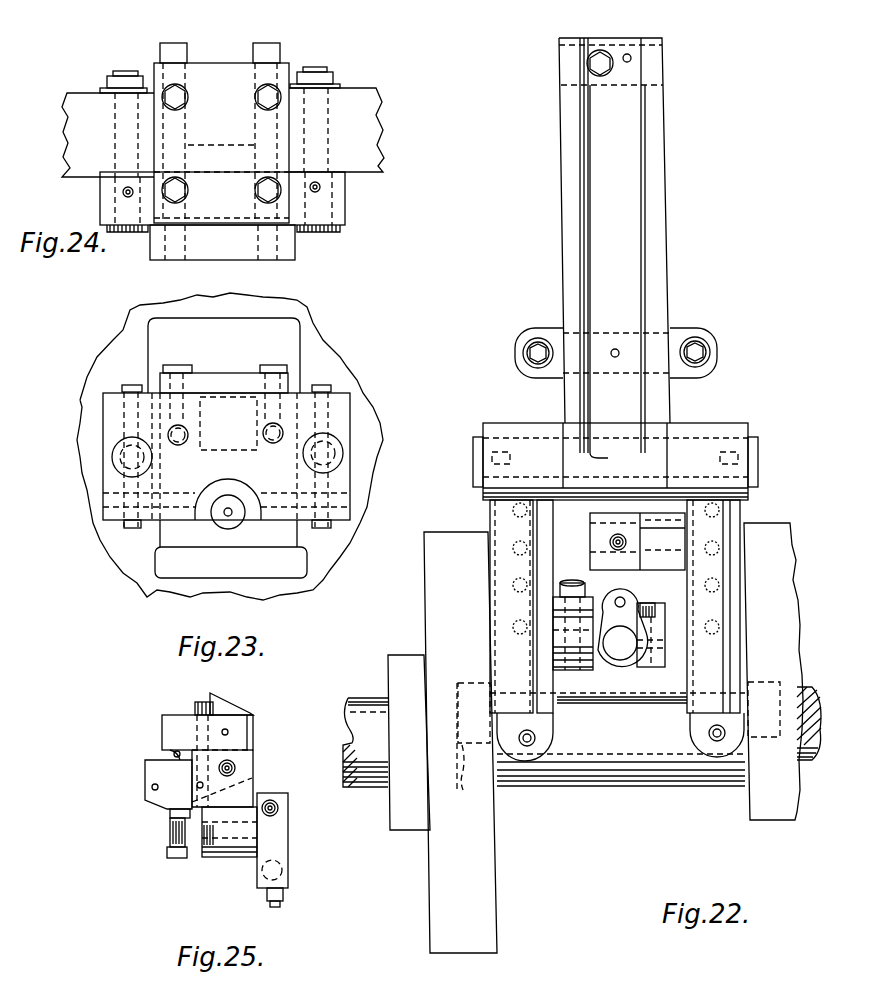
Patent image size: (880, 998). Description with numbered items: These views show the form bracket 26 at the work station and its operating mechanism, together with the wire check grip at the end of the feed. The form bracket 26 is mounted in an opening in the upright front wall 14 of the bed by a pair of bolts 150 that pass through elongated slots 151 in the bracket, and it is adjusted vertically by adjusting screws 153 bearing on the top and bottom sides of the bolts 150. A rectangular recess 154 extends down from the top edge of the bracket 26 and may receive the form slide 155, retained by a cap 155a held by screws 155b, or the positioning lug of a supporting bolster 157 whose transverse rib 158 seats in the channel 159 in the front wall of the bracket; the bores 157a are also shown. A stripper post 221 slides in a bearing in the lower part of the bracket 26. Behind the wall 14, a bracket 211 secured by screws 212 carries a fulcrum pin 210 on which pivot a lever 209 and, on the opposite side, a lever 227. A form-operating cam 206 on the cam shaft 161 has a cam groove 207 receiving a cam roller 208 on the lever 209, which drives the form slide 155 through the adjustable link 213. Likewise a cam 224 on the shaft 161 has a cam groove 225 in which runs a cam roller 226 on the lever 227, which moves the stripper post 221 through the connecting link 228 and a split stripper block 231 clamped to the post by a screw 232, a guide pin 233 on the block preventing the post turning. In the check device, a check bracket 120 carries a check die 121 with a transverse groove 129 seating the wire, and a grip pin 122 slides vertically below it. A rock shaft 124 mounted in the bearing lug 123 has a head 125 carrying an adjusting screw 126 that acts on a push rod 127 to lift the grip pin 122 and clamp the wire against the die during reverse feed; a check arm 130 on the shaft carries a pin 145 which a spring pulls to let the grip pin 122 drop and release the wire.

In FIG. 24, the upright front wall 14 is at (368, 156).
In FIG. 24, the form bracket 26 is at (340, 205).
In FIG. 23, the form bracket 26 is at (345, 418).
In FIG. 25, the check bracket 120 is at (150, 777).
In FIG. 25, the check die 121 is at (175, 724).
In FIG. 25, the grip pin 122 is at (146, 802).
In FIG. 25, the bearing lug 123 is at (233, 858).
In FIG. 25, the rock shaft 124 is at (202, 860).
In FIG. 25, the head 125 is at (170, 840).
In FIG. 25, the adjusting screw 126 is at (172, 858).
In FIG. 25, the push rod 127 is at (170, 833).
In FIG. 25, the transverse groove 129 is at (177, 750).
In FIG. 25, the check arm 130 is at (280, 858).
In FIG. 25, the pin 145 is at (283, 893).
In FIG. 24, the bolts 150 is at (112, 127).
In FIG. 23, the bolts 150 is at (112, 464).
In FIG. 24, the elongated slots 151 is at (338, 193).
In FIG. 23, the elongated slots 151 is at (330, 430).
In FIG. 23, the adjusting screws 153 is at (125, 418).
In FIG. 23, the rectangular recess 154 is at (200, 428).
In FIG. 22, the form slide 155 is at (600, 548).
In FIG. 24, the cap 155a is at (228, 68).
In FIG. 23, the cap 155a is at (200, 374).
In FIG. 24, the screws 155b is at (255, 98).
In FIG. 23, the screws 155b is at (275, 372).
In FIG. 24, the supporting bolster 157 is at (244, 250).
In FIG. 23, the supporting bolster 157 is at (170, 503).
In FIG. 24, the bore 157a is at (221, 145).
In FIG. 23, the bore 157a is at (182, 444).
In FIG. 23, the transverse rib 158 is at (280, 512).
In FIG. 23, the channel 159 is at (340, 503).
In FIG. 22, the cam shaft 161 is at (370, 787).
In FIG. 22, the form-operating cam 206 is at (752, 805).
In FIG. 22, the cam groove 207 is at (780, 744).
In FIG. 22, the cam roller 208 is at (766, 682).
In FIG. 22, the lever 209 is at (738, 588).
In FIG. 22, the fulcrum pin 210 is at (702, 432).
In FIG. 22, the bracket 211 is at (660, 218).
In FIG. 22, the screws 212 is at (522, 354).
In FIG. 22, the adjustable link 213 is at (676, 570).
In FIG. 23, the stripper post 221 is at (222, 524).
In FIG. 22, the stripper post 221 is at (622, 652).
In FIG. 22, the cam 224 is at (495, 876).
In FIG. 22, the cam groove 225 is at (433, 742).
In FIG. 22, the cam roller 226 is at (468, 683).
In FIG. 22, the lever 227 is at (500, 632).
In FIG. 22, the connecting link 228 is at (560, 652).
In FIG. 22, the stripper block 231 is at (610, 660).
In FIG. 22, the screw 232 is at (660, 647).
In FIG. 22, the guide pin 233 is at (616, 598).